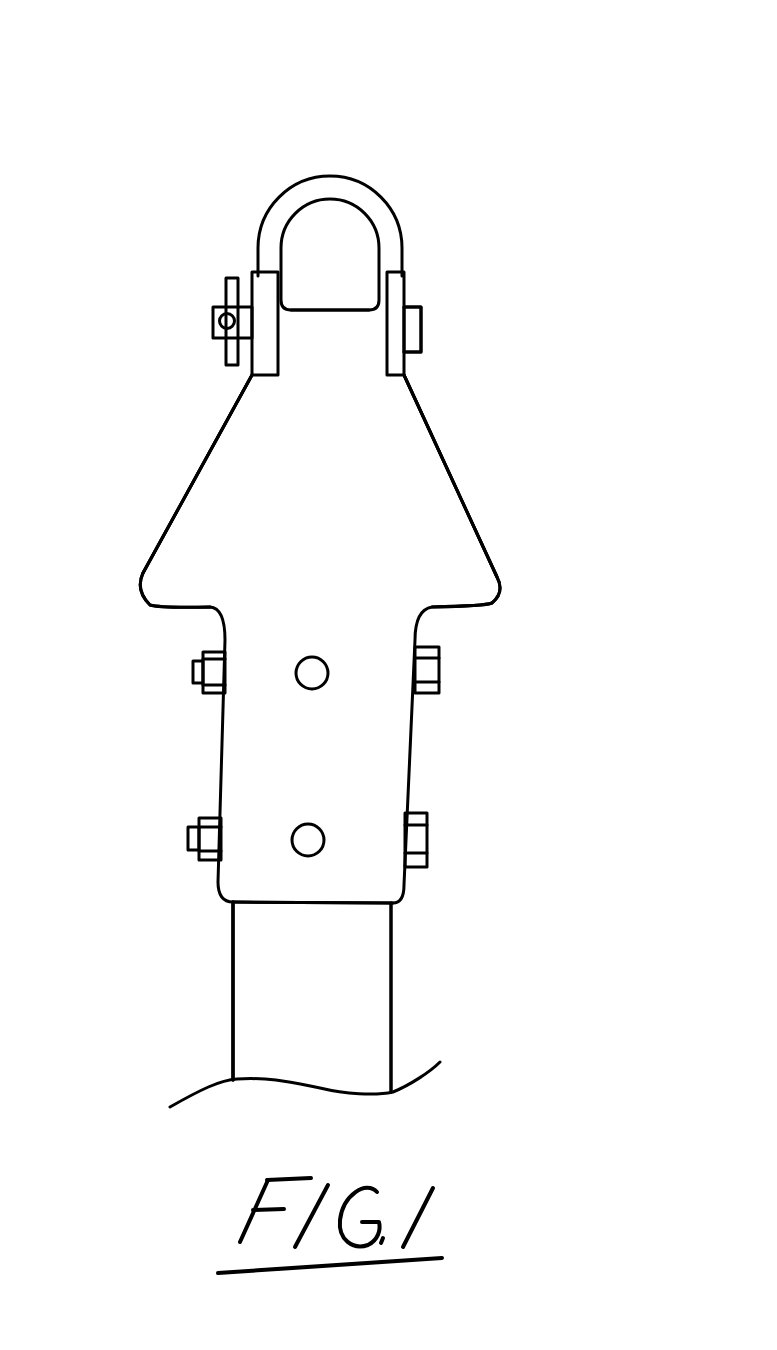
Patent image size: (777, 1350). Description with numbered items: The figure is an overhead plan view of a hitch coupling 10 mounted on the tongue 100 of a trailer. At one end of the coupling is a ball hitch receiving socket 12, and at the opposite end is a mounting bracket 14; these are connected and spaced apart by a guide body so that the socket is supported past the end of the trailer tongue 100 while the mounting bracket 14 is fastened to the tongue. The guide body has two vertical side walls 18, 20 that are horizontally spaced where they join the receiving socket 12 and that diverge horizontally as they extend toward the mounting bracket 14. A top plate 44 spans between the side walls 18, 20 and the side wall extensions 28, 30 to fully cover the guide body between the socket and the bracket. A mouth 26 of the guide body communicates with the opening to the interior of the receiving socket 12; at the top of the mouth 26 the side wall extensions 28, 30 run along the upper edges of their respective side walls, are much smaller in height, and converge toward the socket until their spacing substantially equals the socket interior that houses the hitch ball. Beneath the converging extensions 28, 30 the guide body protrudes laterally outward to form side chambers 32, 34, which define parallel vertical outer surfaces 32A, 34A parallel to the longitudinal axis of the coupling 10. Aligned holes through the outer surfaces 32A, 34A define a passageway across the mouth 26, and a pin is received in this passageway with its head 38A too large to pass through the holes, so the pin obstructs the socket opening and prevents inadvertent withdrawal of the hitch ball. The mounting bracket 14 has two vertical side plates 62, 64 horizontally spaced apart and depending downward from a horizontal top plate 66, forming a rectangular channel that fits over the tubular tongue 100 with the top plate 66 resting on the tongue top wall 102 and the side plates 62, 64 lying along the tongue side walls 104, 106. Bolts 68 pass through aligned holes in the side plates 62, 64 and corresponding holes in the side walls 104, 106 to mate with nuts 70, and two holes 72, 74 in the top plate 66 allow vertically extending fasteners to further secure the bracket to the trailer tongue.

The hitch coupling 10 is at (120, 120).
The ball hitch receiving socket 12 is at (344, 231).
The mounting bracket 14 is at (413, 767).
The vertical side wall 18 is at (180, 492).
The vertical side wall 20 is at (455, 481).
The mouth 26 is at (318, 357).
The side wall extension 28 is at (272, 360).
The side wall extension 30 is at (381, 343).
The side chamber 32 is at (254, 286).
The vertical outer surface 32A is at (248, 366).
The side chamber 34 is at (404, 281).
The vertical outer surface 34A is at (418, 360).
The head of pin 38A is at (421, 323).
The top plate 44 is at (357, 522).
The vertical side plate 62 is at (223, 757).
The vertical side plate 64 is at (415, 710).
The horizontal top plate 66 is at (362, 883).
The bolt 68 is at (422, 840).
The nut 70 is at (212, 814).
The hole 72 is at (313, 657).
The hole 74 is at (312, 763).
The tongue 100 is at (398, 1007).
The top wall 102 is at (298, 953).
The side wall 104 is at (233, 1042).
The side wall 106 is at (390, 1050).